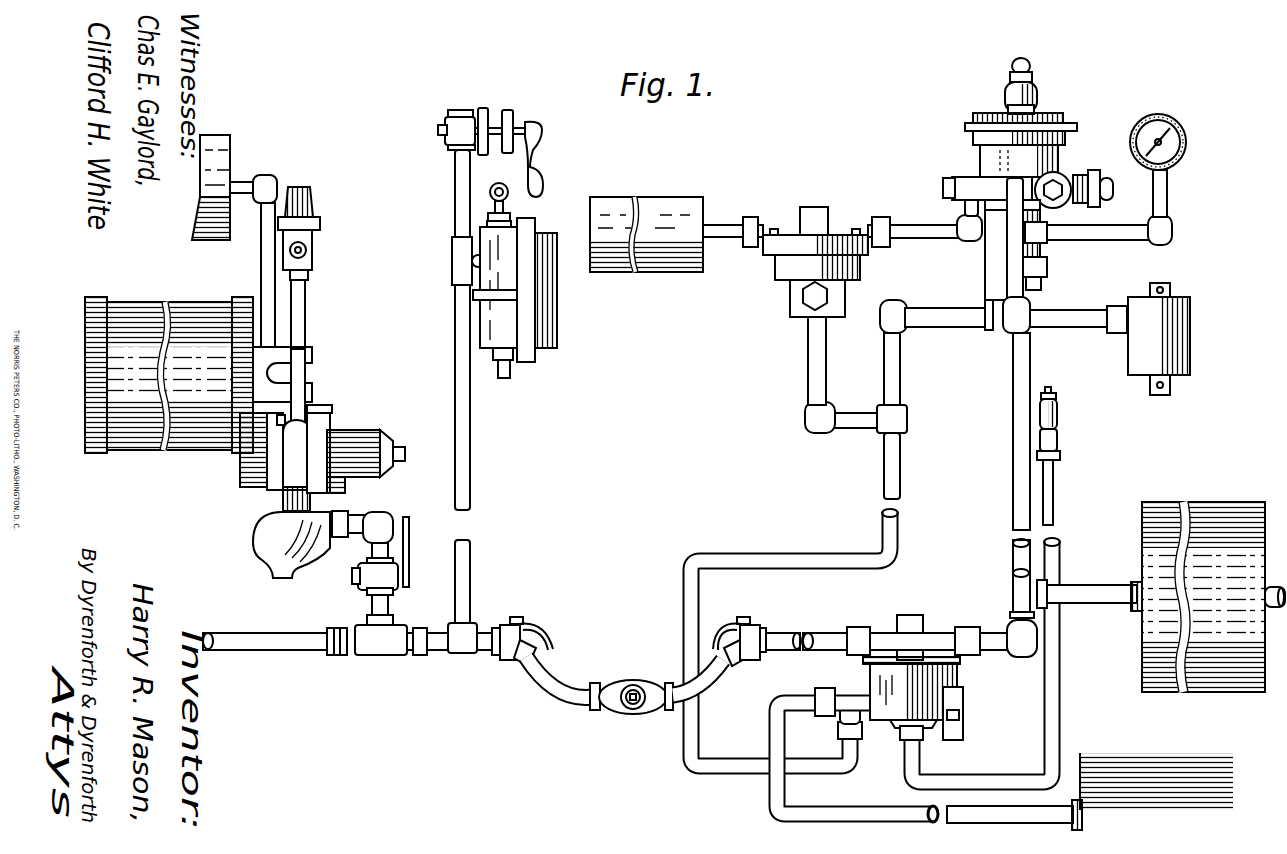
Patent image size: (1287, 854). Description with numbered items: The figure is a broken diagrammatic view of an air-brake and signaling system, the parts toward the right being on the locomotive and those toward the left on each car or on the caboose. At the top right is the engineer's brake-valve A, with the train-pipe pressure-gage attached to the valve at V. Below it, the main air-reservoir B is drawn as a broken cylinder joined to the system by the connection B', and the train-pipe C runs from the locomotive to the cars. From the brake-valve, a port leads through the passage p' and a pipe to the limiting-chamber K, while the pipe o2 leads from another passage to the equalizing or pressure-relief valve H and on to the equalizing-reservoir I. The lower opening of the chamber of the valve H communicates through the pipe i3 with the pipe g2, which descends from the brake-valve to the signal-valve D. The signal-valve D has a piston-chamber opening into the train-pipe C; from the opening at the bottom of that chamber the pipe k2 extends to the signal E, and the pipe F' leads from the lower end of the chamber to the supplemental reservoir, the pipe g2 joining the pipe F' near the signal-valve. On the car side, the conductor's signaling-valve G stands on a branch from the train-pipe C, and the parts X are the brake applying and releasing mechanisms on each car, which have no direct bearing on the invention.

The engineer's brake-valve A is at (1028, 195).
The main air-reservoir B is at (1213, 577).
The brake cylinder pipe B' is at (1083, 580).
The train-pipe C is at (287, 645).
The signal-valve D is at (940, 683).
The signal E is at (1058, 445).
The pipe F' is at (1005, 759).
The conductor's signaling-valve G is at (454, 272).
The equalizing or pressure-relief valve H is at (832, 233).
The equalizing-reservoir I is at (655, 205).
The limiting-chamber K is at (1192, 325).
The train-pipe pressure-gage attachment V is at (1165, 201).
The brake applying and releasing mechanisms X is at (381, 384).
The pipe g2 is at (947, 313).
The pipe i3 is at (815, 377).
The pipe k2 is at (1055, 676).
The pipe o2 is at (723, 232).
The passage p' is at (1078, 303).